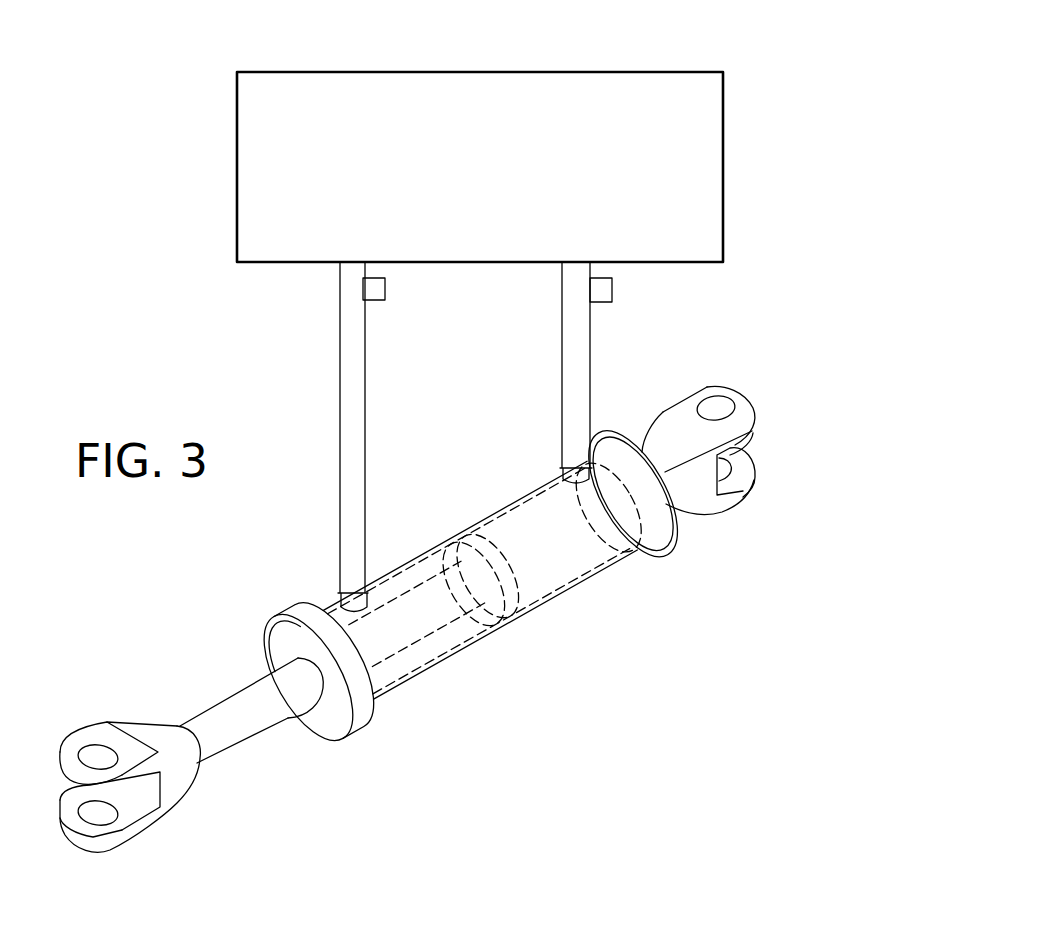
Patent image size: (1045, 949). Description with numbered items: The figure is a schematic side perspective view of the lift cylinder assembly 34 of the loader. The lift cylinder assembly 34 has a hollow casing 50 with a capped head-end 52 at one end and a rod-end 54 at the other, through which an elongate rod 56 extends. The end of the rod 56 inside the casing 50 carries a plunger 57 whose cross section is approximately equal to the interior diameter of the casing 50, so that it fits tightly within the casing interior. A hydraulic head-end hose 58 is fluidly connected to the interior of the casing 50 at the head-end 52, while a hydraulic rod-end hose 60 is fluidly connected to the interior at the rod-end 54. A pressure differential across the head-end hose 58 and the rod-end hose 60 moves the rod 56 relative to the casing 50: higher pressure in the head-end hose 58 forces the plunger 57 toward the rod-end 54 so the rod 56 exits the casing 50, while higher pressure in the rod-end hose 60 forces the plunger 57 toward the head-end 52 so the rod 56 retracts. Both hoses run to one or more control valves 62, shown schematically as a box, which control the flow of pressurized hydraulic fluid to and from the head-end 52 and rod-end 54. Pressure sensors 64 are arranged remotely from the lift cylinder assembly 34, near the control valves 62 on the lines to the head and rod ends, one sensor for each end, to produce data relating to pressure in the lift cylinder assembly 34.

The lift cylinder assembly 34 is at (494, 632).
The hollow casing 50 is at (603, 575).
The head-end 52 is at (667, 560).
The rod-end 54 is at (353, 730).
The rod 56 is at (227, 748).
The plunger 57 is at (503, 622).
The head-end hose 58 is at (590, 376).
The rod-end hose 60 is at (365, 437).
The control valves 62 is at (608, 72).
The pressure sensors 64 is at (385, 285).